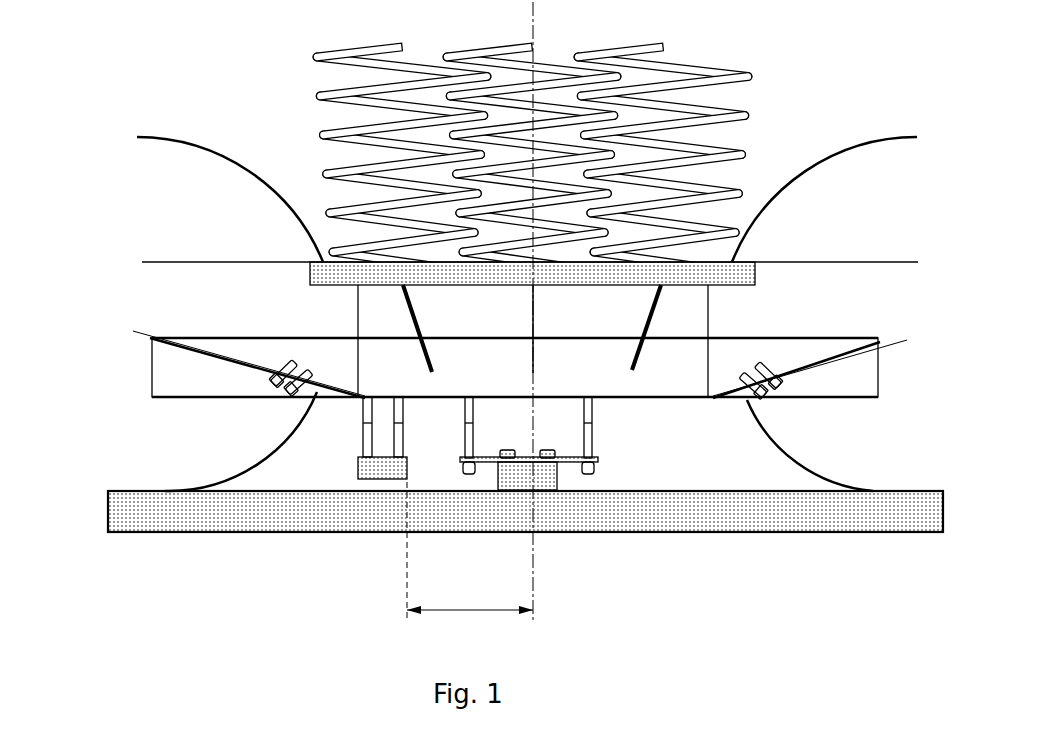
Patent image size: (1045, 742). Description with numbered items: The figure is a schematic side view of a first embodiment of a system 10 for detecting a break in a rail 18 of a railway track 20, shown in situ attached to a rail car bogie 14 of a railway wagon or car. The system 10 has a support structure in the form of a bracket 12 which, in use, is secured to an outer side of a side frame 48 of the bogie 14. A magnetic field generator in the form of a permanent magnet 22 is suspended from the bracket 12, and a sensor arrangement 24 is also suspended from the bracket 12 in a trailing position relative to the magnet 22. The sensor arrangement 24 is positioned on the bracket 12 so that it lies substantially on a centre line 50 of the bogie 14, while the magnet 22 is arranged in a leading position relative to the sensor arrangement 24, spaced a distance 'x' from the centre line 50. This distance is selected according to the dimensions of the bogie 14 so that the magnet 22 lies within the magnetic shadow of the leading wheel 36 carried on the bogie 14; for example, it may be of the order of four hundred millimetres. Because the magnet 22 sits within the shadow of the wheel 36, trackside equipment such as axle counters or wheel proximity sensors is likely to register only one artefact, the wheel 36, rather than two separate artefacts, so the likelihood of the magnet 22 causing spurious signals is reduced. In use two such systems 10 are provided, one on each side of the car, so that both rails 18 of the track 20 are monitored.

The system for detecting a break in a rail 10 is at (680, 456).
The bracket 12 is at (693, 403).
The rail car bogie 14 is at (749, 184).
The rail 18 is at (807, 513).
The railway track 20 is at (134, 508).
The permanent magnet 22 is at (382, 468).
The sensor arrangement 24 is at (560, 477).
The leading wheel 36 is at (192, 172).
The side frame 48 is at (818, 318).
The centre line 50 is at (540, 578).